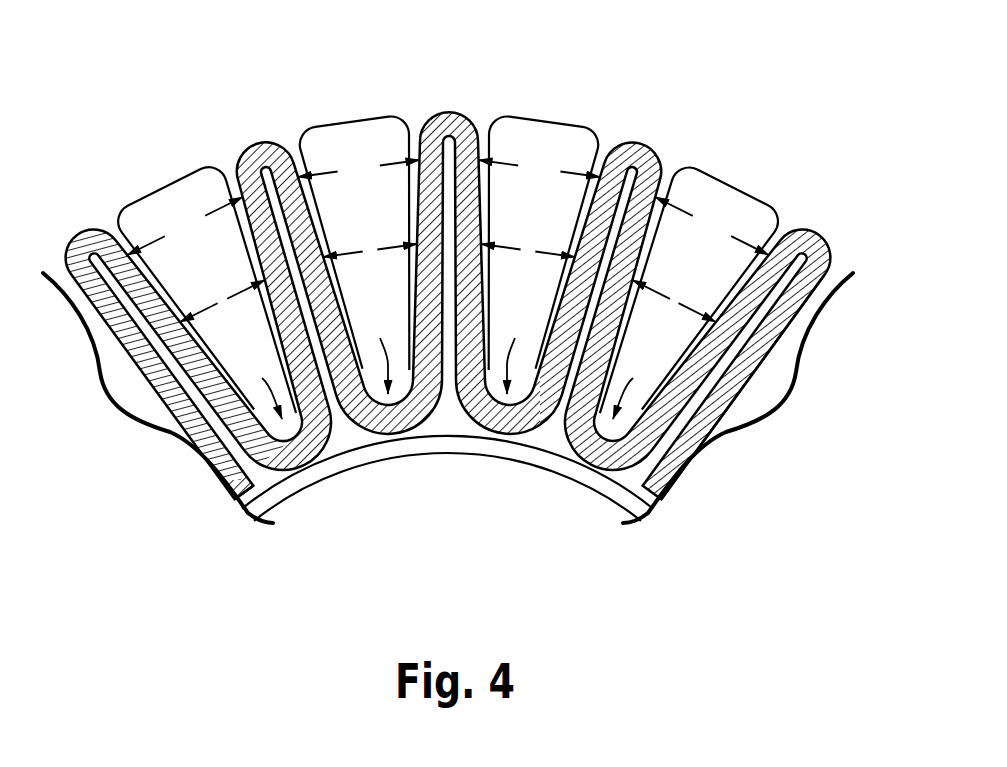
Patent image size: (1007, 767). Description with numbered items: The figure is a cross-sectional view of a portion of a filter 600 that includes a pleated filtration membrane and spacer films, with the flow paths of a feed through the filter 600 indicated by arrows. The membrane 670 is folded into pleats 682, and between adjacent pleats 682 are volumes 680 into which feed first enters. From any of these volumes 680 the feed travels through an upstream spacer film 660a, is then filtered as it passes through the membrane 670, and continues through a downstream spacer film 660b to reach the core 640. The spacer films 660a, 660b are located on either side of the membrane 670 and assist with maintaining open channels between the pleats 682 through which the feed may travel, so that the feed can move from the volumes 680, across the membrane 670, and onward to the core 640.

The filter 600 is at (666, 68).
The core 640 is at (597, 494).
The upstream spacer film 660a is at (92, 336).
The downstream spacer film 660b is at (247, 480).
The membrane 670 is at (763, 345).
The volumes 680 is at (343, 127).
The pleats 682 is at (795, 228).